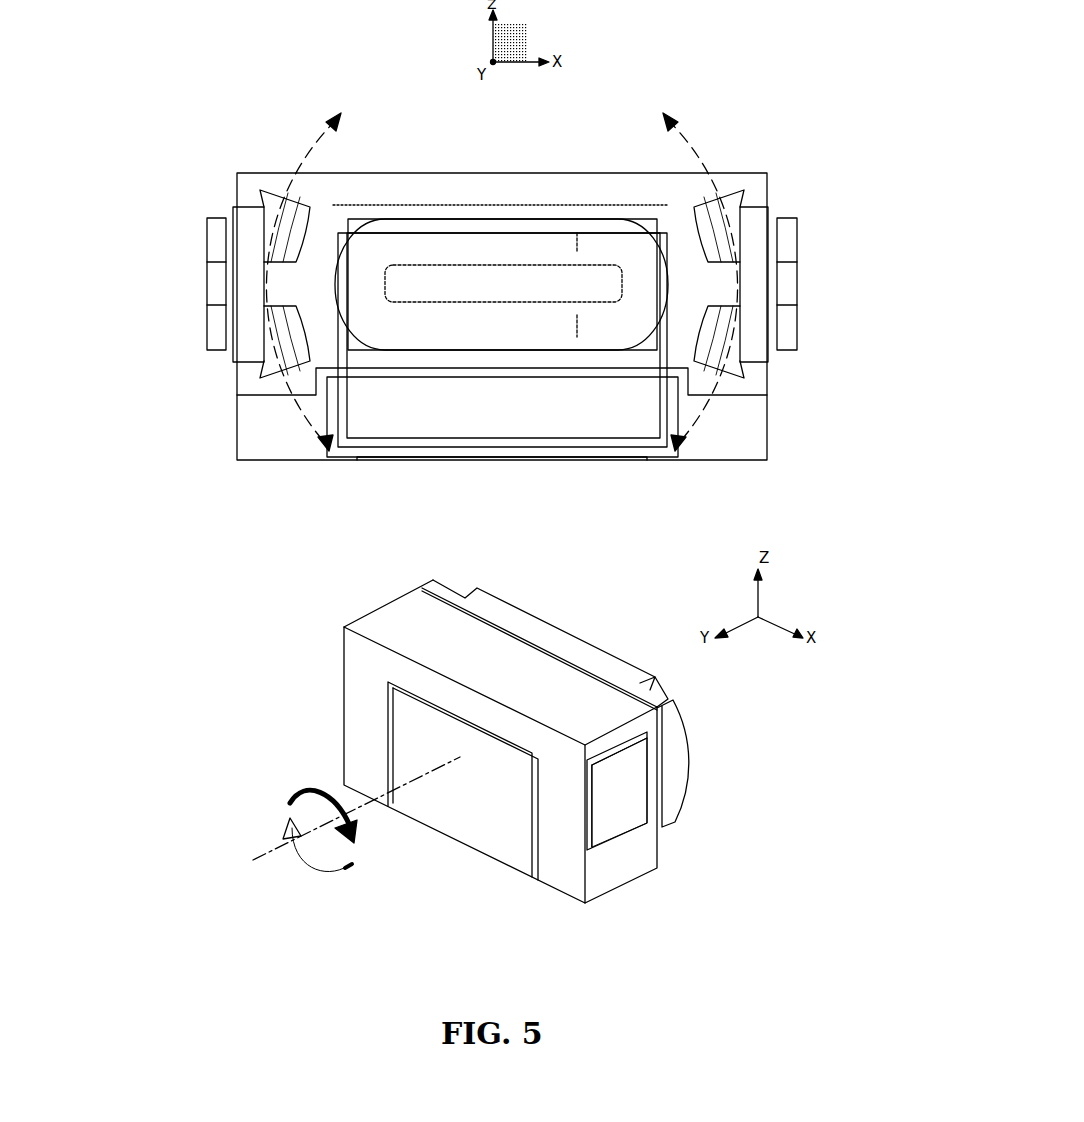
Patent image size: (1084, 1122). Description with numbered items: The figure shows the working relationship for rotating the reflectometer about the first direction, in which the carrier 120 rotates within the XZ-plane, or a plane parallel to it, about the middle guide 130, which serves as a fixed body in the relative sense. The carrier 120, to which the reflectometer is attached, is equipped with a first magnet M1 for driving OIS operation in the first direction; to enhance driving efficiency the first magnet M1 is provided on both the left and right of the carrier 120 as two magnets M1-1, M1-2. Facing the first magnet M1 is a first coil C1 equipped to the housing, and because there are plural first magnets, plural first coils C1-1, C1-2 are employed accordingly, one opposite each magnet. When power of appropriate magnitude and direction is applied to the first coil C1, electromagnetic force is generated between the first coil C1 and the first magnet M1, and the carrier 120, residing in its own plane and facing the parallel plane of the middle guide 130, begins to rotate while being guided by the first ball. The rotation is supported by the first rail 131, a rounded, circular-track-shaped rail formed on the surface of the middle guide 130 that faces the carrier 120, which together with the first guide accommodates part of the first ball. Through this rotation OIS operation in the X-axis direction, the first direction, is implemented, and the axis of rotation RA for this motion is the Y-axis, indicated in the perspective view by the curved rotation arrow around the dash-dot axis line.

The carrier 120 is at (270, 440).
The middle guide 130 is at (413, 190).
The first rail 131 is at (283, 197).
The first magnet M1 is at (503, 531).
The first magnet (left) M1-1 is at (247, 222).
The first magnet (right) M1-2 is at (757, 222).
The first coil C1 is at (504, 284).
The first coil (first instance) C1-1 is at (212, 276).
The first coil (second instance) C1-2 is at (793, 276).
The axis of rotation RA is at (339, 820).